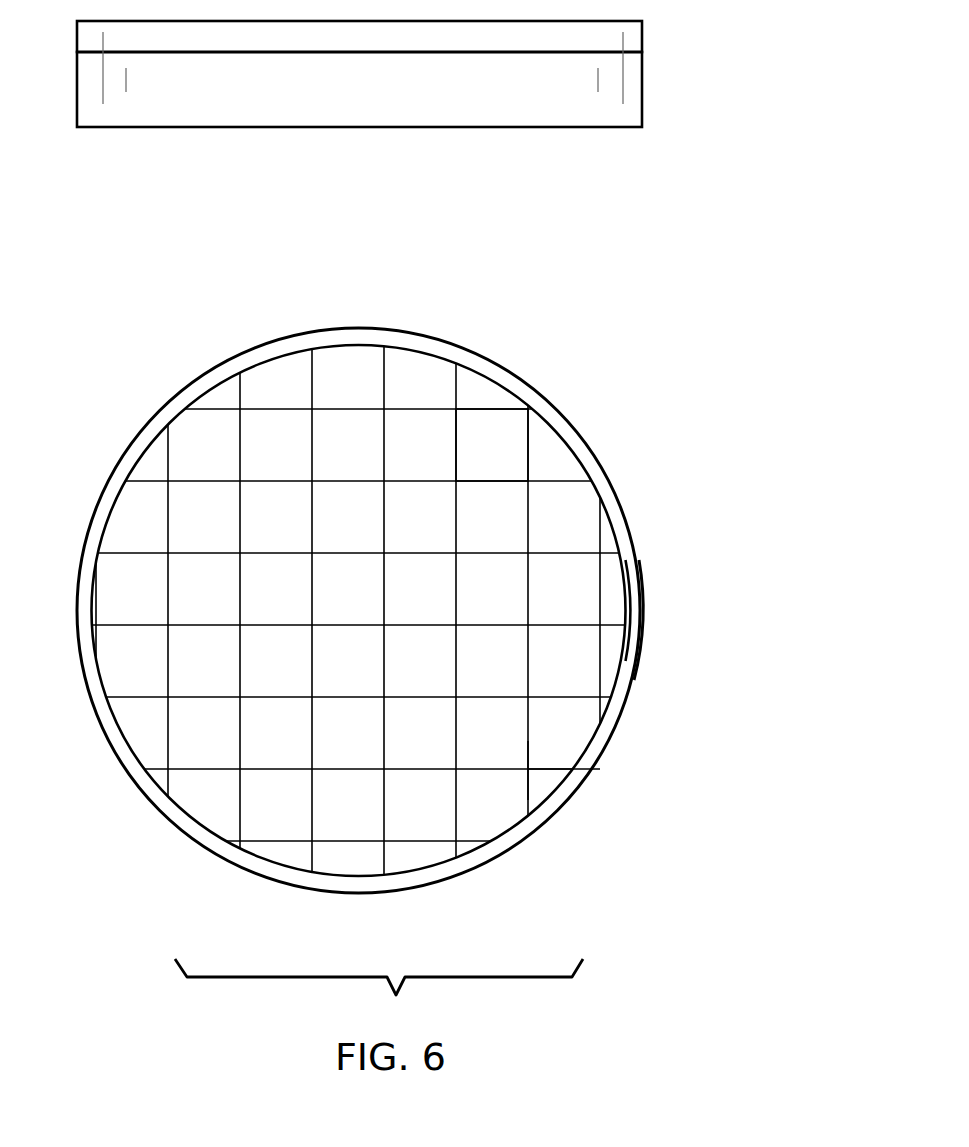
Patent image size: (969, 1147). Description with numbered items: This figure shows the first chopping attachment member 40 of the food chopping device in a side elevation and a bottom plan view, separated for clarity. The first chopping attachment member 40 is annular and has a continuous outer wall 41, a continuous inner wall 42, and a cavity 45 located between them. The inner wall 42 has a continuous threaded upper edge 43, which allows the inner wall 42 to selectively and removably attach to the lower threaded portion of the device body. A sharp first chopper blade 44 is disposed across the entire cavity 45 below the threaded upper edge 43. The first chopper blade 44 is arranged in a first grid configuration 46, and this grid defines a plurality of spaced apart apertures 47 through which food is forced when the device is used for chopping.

The first chopping attachment member 40 is at (712, 435).
The outer wall 41 is at (632, 85).
The inner wall 42 is at (623, 638).
The threaded upper edge 43 is at (643, 37).
The first chopper blade 44 is at (527, 445).
The cavity 45 is at (637, 627).
The first grid configuration 46 is at (548, 782).
The apertures 47 is at (197, 725).